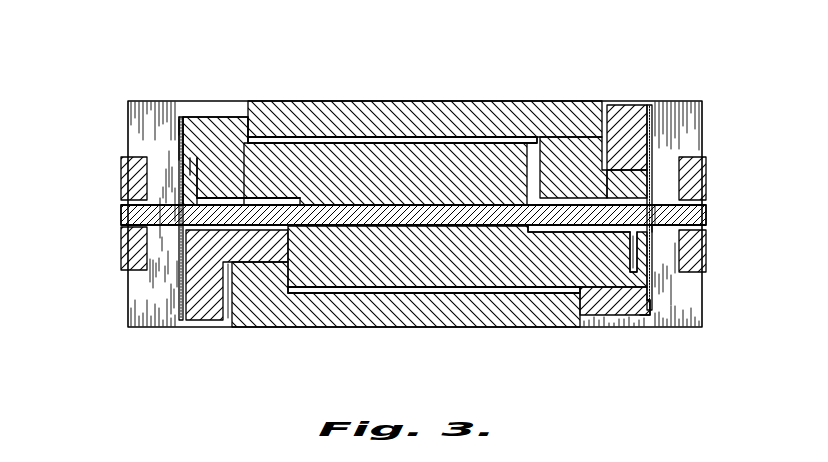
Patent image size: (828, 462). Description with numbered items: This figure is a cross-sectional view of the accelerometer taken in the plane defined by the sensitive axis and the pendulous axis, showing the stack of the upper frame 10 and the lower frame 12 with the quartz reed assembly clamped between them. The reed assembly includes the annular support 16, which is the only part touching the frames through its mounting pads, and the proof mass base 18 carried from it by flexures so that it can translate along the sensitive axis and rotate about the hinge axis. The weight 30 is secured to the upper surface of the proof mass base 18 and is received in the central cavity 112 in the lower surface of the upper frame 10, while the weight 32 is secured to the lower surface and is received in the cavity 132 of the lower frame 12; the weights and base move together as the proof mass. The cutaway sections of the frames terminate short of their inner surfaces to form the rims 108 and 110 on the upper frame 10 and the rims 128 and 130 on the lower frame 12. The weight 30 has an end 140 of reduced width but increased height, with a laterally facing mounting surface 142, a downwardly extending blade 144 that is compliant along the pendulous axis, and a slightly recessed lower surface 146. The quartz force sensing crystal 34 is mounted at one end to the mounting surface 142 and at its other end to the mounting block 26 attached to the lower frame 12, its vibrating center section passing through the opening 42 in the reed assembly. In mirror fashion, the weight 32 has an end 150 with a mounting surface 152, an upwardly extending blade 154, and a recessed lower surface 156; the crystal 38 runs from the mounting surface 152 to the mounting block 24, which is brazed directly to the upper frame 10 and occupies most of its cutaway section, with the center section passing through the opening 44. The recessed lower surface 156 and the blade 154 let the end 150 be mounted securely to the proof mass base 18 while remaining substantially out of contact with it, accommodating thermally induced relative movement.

The upper frame 10 is at (420, 113).
The lower frame 12 is at (488, 318).
The annular support 16 is at (120, 213).
The proof mass base 18 is at (330, 210).
The mounting block 24 is at (637, 120).
The mounting block 26 is at (207, 308).
The weight 30 is at (367, 173).
The weight 32 is at (378, 275).
The quartz force sensing crystal 34 is at (185, 150).
The quartz force sensing crystal 38 is at (652, 147).
The opening 42 is at (178, 240).
The opening 44 is at (665, 222).
The rim 108 is at (125, 185).
The rim 110 is at (690, 176).
The central cavity 112 is at (540, 140).
The rim 128 is at (125, 250).
The rim 130 is at (690, 250).
The cavity 132 is at (278, 290).
The end 140 is at (262, 138).
The mounting surface 142 is at (180, 140).
The blade 144 is at (183, 127).
The recessed lower surface 146 is at (233, 123).
The end 150 is at (600, 316).
The mounting surface 152 is at (645, 318).
The blade 154 is at (638, 258).
The recessed lower surface 156 is at (582, 234).